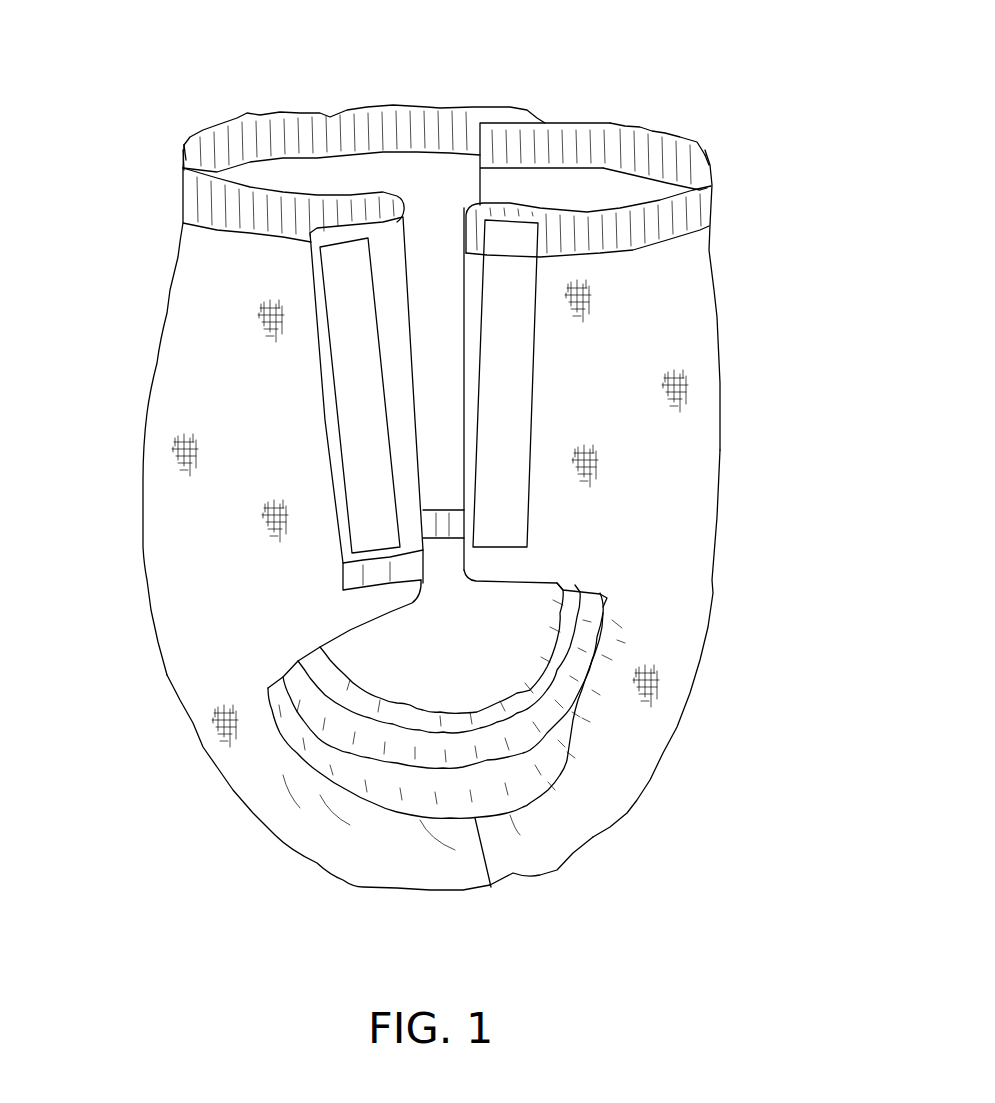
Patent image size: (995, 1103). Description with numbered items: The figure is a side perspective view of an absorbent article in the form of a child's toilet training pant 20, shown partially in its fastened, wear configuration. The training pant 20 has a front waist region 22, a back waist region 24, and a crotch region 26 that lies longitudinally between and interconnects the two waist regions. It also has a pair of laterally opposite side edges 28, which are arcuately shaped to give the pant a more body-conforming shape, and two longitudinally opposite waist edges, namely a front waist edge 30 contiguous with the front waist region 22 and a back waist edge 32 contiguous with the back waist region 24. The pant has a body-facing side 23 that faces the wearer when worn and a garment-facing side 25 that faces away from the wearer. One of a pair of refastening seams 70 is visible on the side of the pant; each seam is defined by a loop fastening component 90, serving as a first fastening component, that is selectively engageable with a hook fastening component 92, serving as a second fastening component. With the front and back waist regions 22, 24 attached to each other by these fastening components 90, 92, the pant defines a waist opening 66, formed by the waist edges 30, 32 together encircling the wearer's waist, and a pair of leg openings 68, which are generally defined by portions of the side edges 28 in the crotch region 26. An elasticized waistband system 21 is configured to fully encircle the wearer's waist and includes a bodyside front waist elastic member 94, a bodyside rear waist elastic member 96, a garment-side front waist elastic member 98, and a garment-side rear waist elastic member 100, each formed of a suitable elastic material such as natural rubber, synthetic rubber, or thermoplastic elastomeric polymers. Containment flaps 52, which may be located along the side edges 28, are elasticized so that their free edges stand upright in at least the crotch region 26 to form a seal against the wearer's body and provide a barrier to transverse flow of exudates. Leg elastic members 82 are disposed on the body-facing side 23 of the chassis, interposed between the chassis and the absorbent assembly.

The training pant 20 is at (204, 99).
The elasticized waistband system 21 is at (327, 99).
The front waist region 22 is at (680, 552).
The body-facing side 23 is at (432, 170).
The back waist region 24 is at (183, 409).
The garment-facing side 25 is at (705, 388).
The crotch region 26 is at (364, 863).
The side edges 28 is at (491, 887).
The front waist edge 30 is at (703, 145).
The back waist edge 32 is at (185, 148).
The containment flaps 52 is at (377, 735).
The waist opening 66 is at (595, 151).
The leg openings 68 is at (539, 627).
The refastening seams 70 is at (515, 92).
The leg elastic members 82 is at (422, 712).
The loop fastening components 90 is at (355, 375).
The hook fastening components 92 is at (513, 226).
The bodyside front waist elastic member 94 is at (658, 135).
The bodyside rear waist elastic member 96 is at (280, 130).
The garment-side front waist elastic member 98 is at (705, 215).
The garment-side rear waist elastic member 100 is at (205, 200).